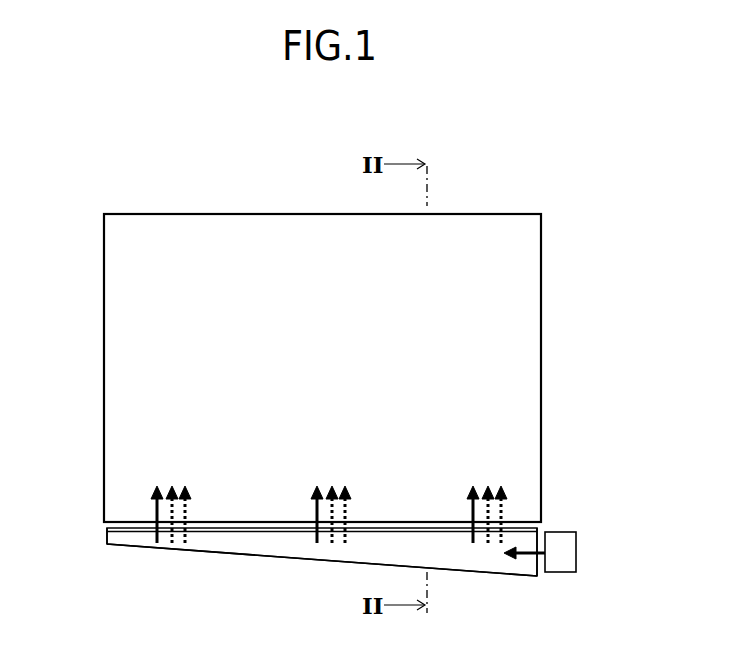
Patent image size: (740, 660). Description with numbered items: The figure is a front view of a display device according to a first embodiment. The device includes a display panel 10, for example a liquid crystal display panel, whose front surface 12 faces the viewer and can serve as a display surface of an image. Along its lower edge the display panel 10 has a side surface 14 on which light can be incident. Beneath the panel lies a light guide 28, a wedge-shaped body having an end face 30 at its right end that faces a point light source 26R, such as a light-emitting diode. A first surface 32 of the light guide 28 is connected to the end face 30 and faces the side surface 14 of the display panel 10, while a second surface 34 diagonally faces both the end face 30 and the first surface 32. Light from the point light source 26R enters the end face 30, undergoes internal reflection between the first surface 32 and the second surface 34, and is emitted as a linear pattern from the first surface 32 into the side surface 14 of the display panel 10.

The display panel 10 is at (520, 298).
The front surface 12 is at (335, 366).
The side surface 14 is at (452, 516).
The point light source 26R is at (567, 553).
The light guide 28 is at (108, 538).
The end face 30 is at (540, 537).
The first surface 32 is at (272, 527).
The second surface 34 is at (264, 554).